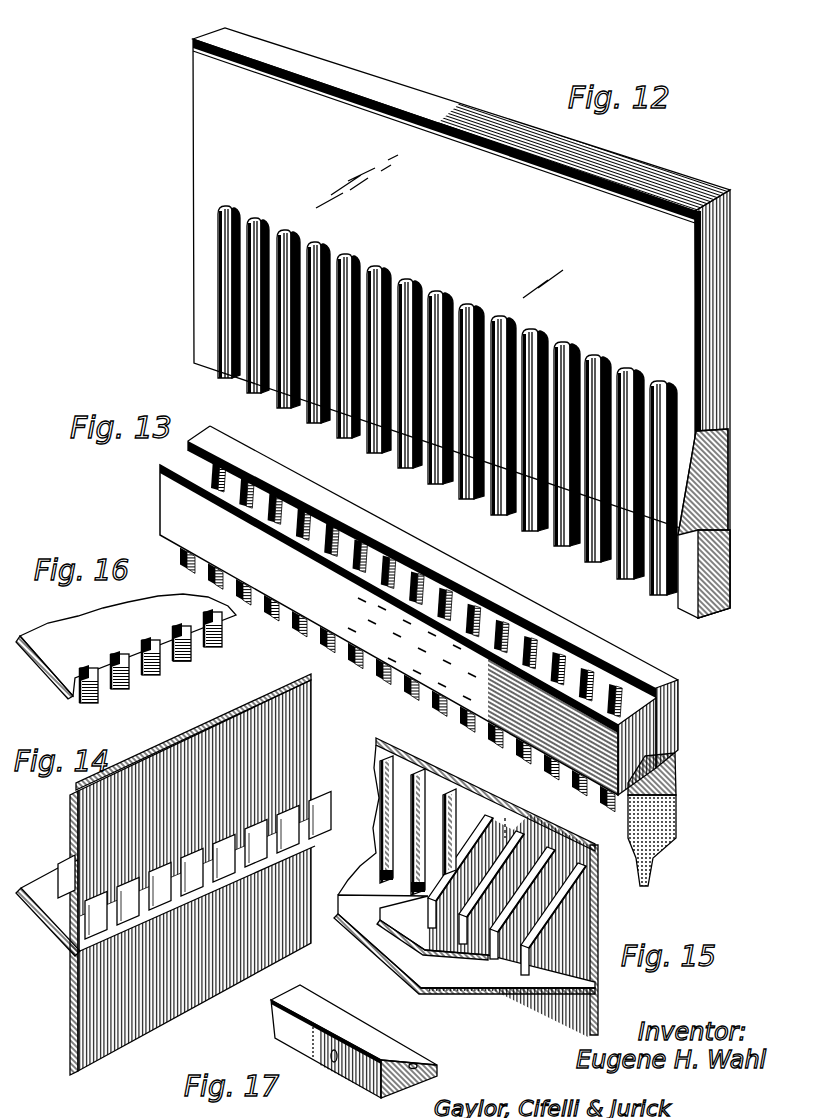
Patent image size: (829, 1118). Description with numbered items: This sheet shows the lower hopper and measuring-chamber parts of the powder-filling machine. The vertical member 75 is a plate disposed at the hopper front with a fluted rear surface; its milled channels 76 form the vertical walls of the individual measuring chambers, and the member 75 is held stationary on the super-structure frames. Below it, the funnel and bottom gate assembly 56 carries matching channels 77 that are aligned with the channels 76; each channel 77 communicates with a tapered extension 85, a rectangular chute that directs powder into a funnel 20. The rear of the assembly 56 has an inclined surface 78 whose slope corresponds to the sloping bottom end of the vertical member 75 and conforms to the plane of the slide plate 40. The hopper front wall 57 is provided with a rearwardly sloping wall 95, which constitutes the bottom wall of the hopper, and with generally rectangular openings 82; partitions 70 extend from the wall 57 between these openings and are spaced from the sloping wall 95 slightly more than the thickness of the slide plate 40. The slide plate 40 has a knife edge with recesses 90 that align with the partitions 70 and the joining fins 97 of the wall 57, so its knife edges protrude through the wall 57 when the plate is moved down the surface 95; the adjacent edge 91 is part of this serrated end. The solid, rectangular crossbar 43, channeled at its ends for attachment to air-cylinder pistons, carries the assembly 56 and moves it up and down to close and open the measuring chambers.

In FIG. 12, the vertical member 75 is at (487, 107).
In FIG. 12, the channels 76 is at (227, 372).
In FIG. 13, the channels 77 is at (255, 478).
In FIG. 13, the tapered extensions 85 is at (172, 548).
In FIG. 13, the funnel and bottom gate assembly 56 is at (689, 711).
In FIG. 13, the inclined surface 78 is at (652, 770).
In FIG. 13, the funnel 20 is at (664, 828).
In FIG. 16, the slide plate 40 is at (113, 618).
In FIG. 15, the slide plate 40 is at (395, 940).
In FIG. 16, the recesses 90 is at (112, 655).
In FIG. 16, the tab edge 91 is at (180, 658).
In FIG. 14, the front wall 57 is at (165, 740).
In FIG. 15, the front wall 57 is at (445, 790).
In FIG. 14, the openings 82 is at (262, 862).
In FIG. 15, the openings 82 is at (415, 882).
In FIG. 14, the joining fins 97 is at (290, 803).
In FIG. 14, the partitions 70 is at (52, 855).
In FIG. 15, the partitions 70 is at (400, 775).
In FIG. 15, the sloping wall 95 is at (465, 985).
In FIG. 17, the crossbar 43 is at (393, 1040).